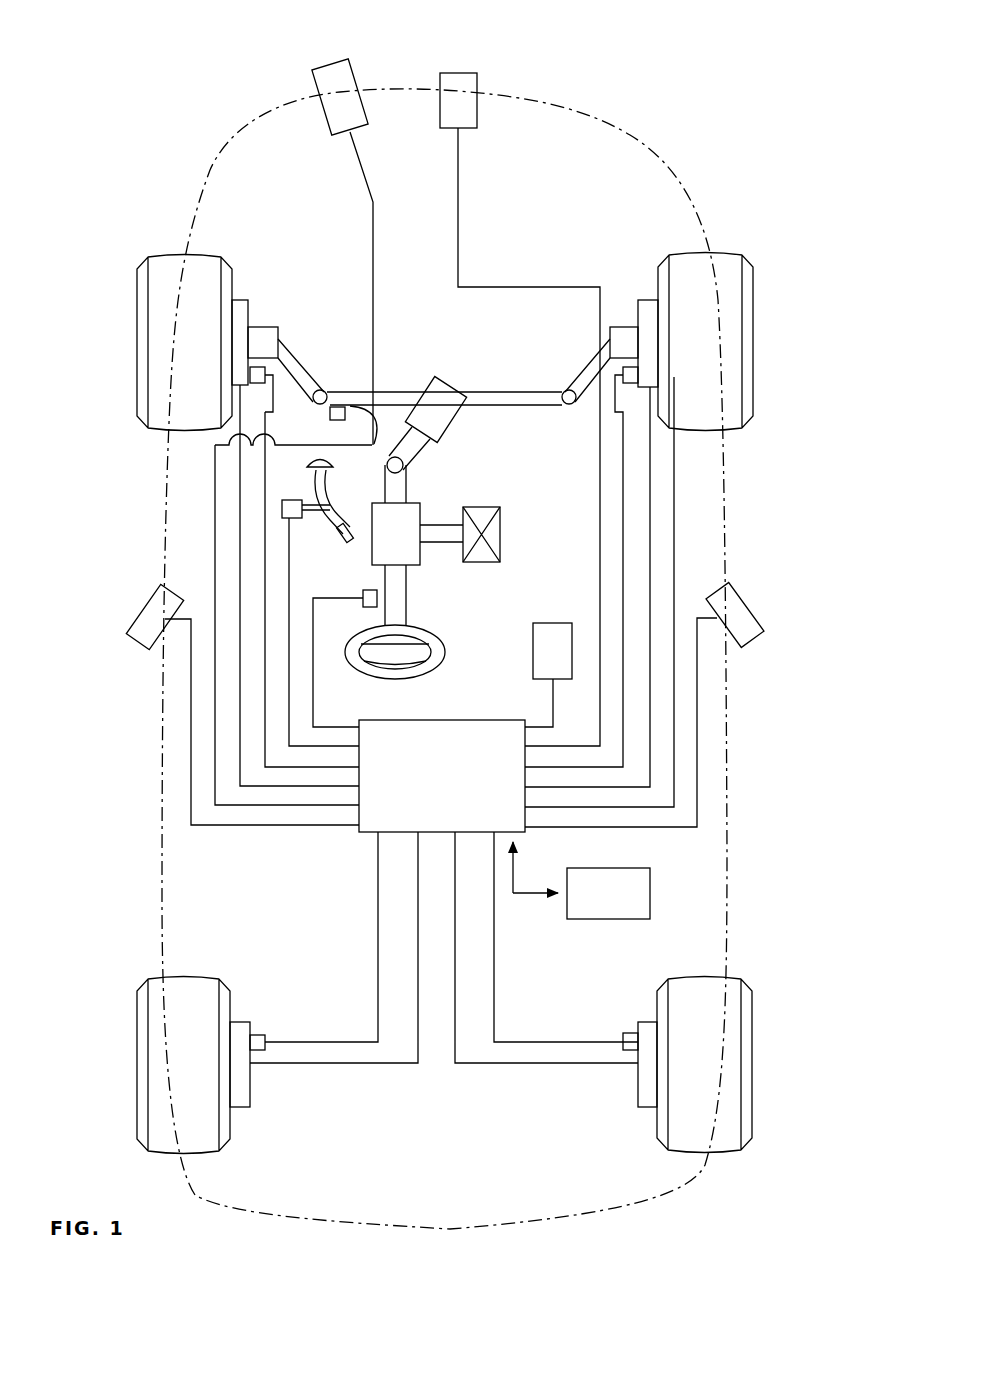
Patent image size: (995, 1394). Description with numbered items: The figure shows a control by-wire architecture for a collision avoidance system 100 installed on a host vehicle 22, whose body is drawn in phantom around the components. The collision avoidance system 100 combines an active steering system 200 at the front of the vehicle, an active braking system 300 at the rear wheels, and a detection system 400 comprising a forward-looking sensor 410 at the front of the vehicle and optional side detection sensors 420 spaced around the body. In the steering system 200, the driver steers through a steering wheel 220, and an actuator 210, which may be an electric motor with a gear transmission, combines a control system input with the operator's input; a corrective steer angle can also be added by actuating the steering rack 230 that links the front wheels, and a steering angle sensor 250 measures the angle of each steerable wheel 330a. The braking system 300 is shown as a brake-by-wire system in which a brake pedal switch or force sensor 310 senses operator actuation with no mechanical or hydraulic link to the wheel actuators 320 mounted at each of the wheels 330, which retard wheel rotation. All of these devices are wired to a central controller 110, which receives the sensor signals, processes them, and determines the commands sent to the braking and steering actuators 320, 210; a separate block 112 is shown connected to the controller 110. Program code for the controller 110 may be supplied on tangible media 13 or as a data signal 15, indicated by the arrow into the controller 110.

The collision avoidance system 100 is at (163, 107).
The active steering system 200 is at (95, 270).
The active braking system 300 is at (95, 988).
The detection system 400 is at (493, 60).
The steerable wheel 330a is at (137, 300).
The wheels 330 is at (137, 1012).
The wheel actuators 320 is at (247, 300).
The steering angle sensor 250 is at (330, 416).
The actuator 210 is at (500, 521).
The steering wheel 220 is at (355, 666).
The steering rack 230 is at (315, 460).
The brake pedal switch and/or force sensor 310 is at (288, 500).
The side detection sensors 420 is at (312, 84).
The forward-looking sensor 410 is at (478, 82).
The controller 110 is at (467, 720).
The memory 112 is at (544, 623).
The tangible media 13 is at (590, 920).
The data signal 15 is at (537, 893).
The host vehicle 22 is at (694, 1209).